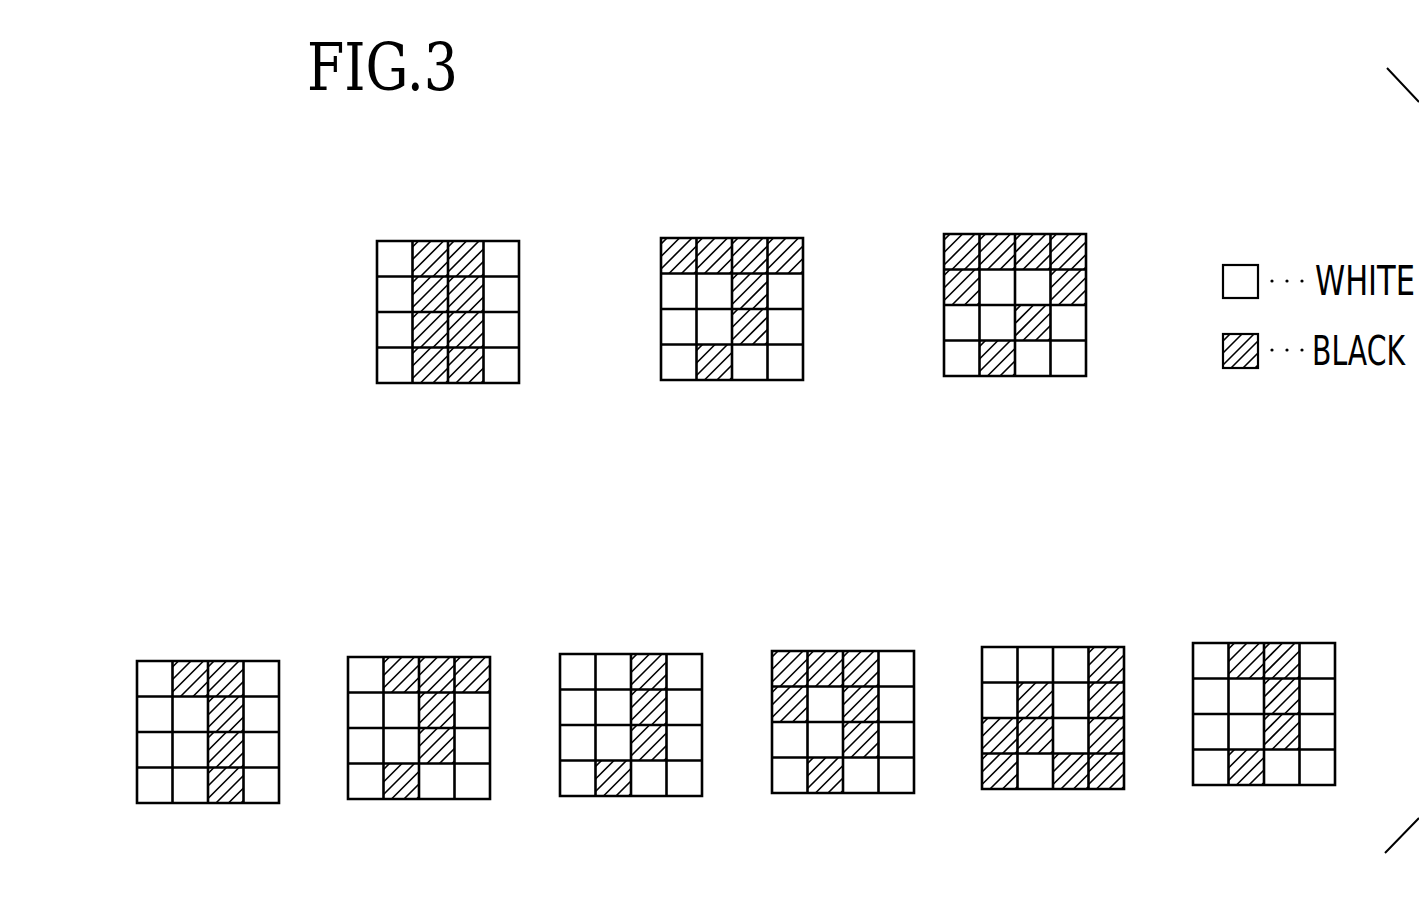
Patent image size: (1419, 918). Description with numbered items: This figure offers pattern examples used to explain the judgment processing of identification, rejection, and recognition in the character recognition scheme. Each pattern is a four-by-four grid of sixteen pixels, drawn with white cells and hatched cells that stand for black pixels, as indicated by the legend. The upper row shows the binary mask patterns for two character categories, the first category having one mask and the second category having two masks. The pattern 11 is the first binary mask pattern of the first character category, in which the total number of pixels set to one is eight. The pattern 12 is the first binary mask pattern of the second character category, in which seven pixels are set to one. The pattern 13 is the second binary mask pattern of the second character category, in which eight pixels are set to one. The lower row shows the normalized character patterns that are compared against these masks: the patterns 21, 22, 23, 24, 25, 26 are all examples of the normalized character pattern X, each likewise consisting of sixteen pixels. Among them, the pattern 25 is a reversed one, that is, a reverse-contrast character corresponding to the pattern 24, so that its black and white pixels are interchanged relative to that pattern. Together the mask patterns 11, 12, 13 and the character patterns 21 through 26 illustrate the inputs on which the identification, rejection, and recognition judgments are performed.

The binary mask pattern M11 11 is at (450, 242).
The binary mask pattern M21 12 is at (733, 238).
The binary mask pattern M22 13 is at (1013, 234).
The normalized character pattern X 21 is at (210, 662).
The normalized character pattern X 22 is at (418, 658).
The normalized character pattern X 23 is at (632, 655).
The normalized character pattern X 24 is at (838, 651).
The normalized character pattern X (reverse contrast character) 25 is at (1050, 647).
The normalized character pattern X 26 is at (1262, 643).